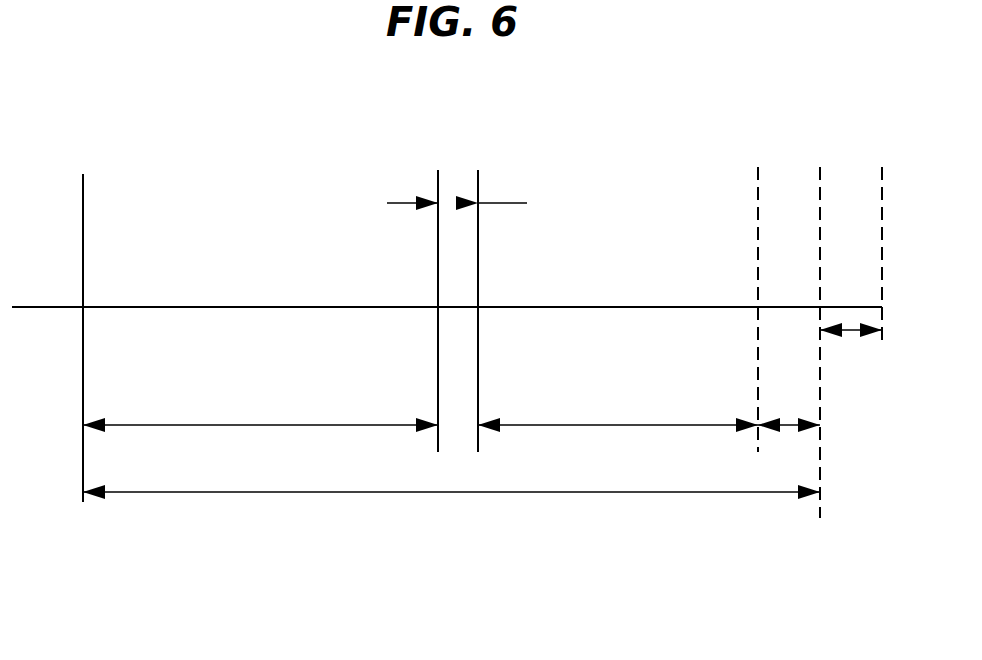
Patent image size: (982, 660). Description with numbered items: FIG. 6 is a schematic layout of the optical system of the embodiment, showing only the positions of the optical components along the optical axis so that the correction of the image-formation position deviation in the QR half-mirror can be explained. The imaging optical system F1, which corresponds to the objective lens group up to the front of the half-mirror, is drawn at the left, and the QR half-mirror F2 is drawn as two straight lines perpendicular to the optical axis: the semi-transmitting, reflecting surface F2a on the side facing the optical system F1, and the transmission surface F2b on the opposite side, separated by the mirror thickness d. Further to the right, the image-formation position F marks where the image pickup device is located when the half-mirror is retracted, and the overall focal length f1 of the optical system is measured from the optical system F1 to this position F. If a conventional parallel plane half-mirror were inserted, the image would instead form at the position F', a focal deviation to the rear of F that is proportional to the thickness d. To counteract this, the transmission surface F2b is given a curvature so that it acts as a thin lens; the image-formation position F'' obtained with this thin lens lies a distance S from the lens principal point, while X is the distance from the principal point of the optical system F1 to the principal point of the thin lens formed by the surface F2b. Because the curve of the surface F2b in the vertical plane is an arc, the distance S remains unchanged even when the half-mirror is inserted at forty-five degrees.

The imaging optical system F1 is at (83, 322).
The QR half-mirror F2 is at (479, 182).
The semi-transmitting surface F2a is at (437, 351).
The transmission surface F2b is at (479, 351).
The image-formation position with thin lens inserted F'' is at (756, 296).
The image-formation position F is at (820, 329).
The image-formation position with parallel plane half-mirror F' is at (881, 240).
The thickness d is at (457, 206).
The distance from principal point of optical system to principal point of thin lens X is at (260, 410).
The distance from thin lens principal point to image-formation position S is at (618, 412).
The overall focal length f1 is at (451, 508).